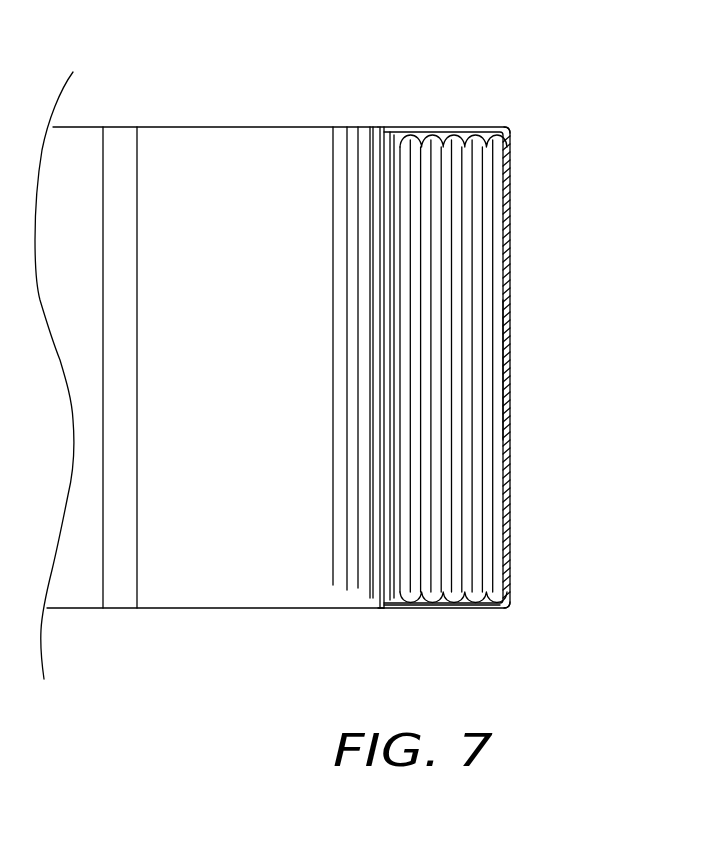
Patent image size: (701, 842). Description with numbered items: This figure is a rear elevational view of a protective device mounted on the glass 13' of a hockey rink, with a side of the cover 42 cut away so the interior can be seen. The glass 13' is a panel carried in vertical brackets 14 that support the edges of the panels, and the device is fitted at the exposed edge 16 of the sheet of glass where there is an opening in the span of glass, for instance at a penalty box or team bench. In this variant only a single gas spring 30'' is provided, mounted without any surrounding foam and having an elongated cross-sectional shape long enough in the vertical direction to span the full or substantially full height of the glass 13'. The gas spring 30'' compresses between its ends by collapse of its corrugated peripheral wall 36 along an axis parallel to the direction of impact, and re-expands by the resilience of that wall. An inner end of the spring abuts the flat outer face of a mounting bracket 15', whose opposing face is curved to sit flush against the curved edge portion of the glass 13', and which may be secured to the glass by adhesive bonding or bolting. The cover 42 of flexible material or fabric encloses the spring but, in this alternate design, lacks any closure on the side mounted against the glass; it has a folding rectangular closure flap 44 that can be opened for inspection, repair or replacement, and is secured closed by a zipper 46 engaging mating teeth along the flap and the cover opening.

The glass 13' is at (209, 370).
The vertical brackets 14 is at (117, 153).
The exposed edge 16 is at (382, 150).
The mounting bracket 15' is at (444, 334).
The corrugated peripheral wall 36 is at (480, 217).
The closure flap 44 is at (510, 280).
The zipper 46 is at (508, 127).
The cover 42 is at (447, 610).
The single gas spring 30'' is at (539, 370).